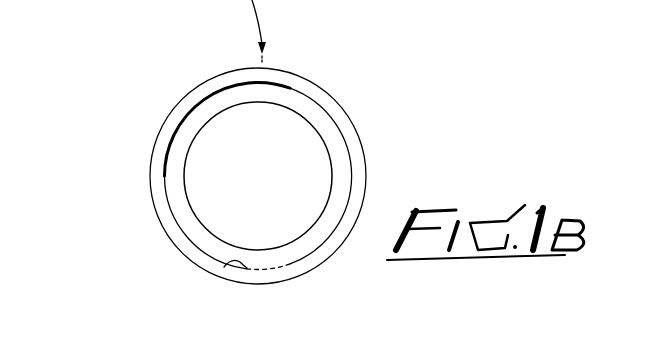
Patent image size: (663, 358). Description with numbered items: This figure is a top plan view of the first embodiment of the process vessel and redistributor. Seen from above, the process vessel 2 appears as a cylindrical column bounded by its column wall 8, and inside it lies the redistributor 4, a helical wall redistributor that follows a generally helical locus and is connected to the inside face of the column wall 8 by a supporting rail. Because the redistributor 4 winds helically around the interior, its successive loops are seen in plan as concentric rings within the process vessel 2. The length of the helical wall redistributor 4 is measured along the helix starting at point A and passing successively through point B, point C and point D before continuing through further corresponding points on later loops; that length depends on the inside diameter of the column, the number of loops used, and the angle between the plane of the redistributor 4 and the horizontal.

The process vessel 2 is at (182, 102).
The redistributor 4 is at (327, 127).
The column wall 8 is at (223, 266).
The point A is at (235, 104).
The point B is at (139, 155).
The point C is at (216, 240).
The point D is at (335, 178).